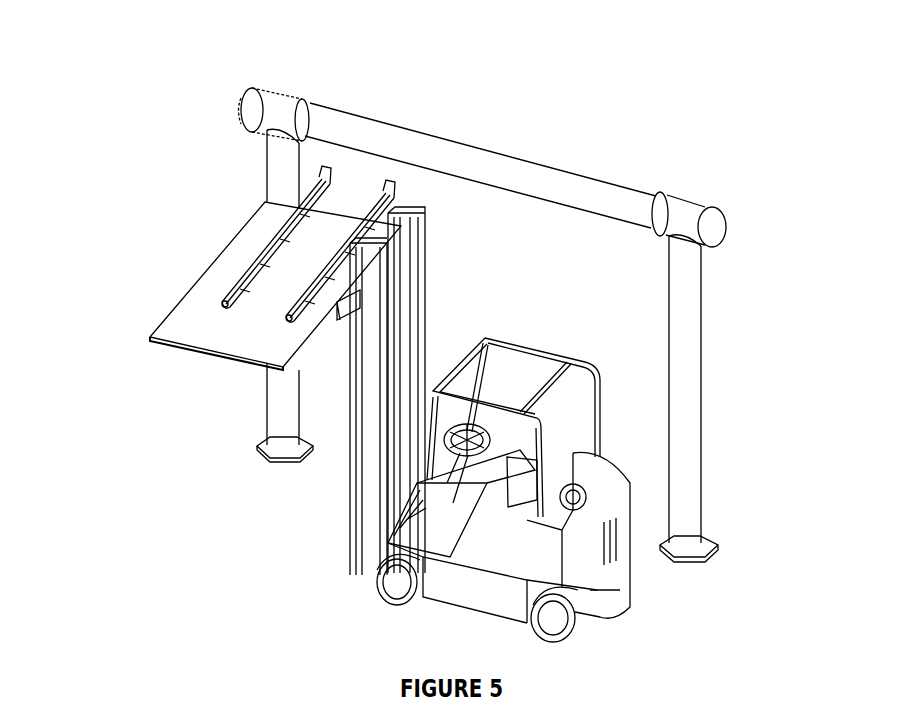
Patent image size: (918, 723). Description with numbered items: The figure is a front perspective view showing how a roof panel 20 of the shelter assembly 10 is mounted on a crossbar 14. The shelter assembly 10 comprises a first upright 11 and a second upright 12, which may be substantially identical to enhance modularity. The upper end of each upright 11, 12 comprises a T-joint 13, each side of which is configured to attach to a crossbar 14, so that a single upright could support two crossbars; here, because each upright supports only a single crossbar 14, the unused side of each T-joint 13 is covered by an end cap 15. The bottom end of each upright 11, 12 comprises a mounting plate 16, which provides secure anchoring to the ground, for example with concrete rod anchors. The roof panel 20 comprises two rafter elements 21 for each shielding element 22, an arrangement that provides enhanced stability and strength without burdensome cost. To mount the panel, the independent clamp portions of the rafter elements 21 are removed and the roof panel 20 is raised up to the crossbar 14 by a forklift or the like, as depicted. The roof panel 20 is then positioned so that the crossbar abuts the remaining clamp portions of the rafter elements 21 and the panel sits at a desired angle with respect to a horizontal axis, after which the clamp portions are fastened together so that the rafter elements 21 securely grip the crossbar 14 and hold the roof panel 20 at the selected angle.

The shelter assembly 10 is at (733, 162).
The first upright 11 is at (273, 400).
The second upright 12 is at (690, 405).
The T-joint 13 is at (276, 106).
The crossbar 14 is at (550, 183).
The end cap 15 is at (716, 235).
The mounting plate 16 is at (715, 540).
The roof panel 20 is at (216, 295).
The rafter element 21 is at (275, 232).
The shielding element 22 is at (197, 320).